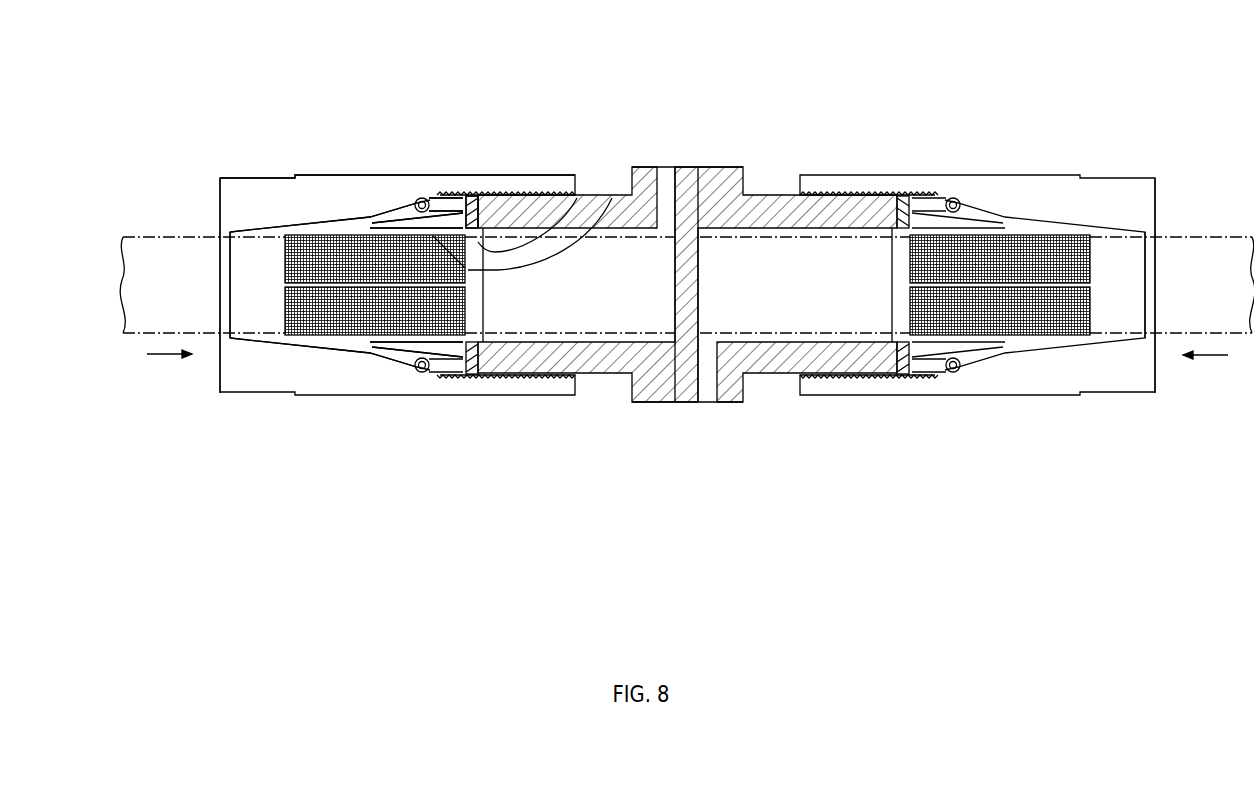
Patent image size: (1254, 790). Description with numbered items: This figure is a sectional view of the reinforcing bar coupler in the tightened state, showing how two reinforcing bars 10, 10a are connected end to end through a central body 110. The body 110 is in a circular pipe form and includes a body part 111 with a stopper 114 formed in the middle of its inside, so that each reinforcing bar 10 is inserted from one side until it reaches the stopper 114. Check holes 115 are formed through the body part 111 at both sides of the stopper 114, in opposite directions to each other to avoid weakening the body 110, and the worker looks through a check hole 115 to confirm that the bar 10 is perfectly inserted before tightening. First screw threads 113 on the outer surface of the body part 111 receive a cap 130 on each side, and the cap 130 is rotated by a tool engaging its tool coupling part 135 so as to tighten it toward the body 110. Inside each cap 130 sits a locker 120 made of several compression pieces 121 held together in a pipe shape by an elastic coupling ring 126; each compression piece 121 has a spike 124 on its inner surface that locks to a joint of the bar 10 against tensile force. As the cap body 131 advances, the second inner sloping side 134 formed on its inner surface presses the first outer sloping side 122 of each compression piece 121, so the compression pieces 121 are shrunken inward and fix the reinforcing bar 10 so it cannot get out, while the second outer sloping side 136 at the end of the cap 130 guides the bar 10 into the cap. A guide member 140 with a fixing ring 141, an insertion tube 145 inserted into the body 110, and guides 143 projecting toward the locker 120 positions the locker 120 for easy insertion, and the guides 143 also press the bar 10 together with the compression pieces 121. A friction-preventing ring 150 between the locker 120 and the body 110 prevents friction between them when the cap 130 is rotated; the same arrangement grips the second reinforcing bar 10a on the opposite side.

The reinforcing bar 10 is at (177, 237).
The pipe 10a is at (1197, 237).
The body 110 is at (687, 351).
The body part 111 is at (607, 373).
The first screw thread 113 is at (552, 375).
The stopper 114 is at (680, 292).
The check hole 115 is at (701, 326).
The locker 120 is at (381, 385).
The compression piece 121 is at (453, 414).
The first outer sloping side 122 is at (370, 330).
The spike 124 is at (342, 328).
The coupling ring 126 is at (423, 372).
The cap 130 is at (390, 218).
The cap body 131 is at (230, 78).
The second inner sloping side 134 is at (370, 218).
The tool coupling part 135 is at (256, 176).
The second outer sloping side 136 is at (213, 226).
The guide member 140 is at (527, 134).
The fixing ring 141 is at (533, 178).
The guide 143 is at (542, 78).
The insertion tube 145 is at (575, 178).
The friction-preventing ring 150 is at (507, 198).